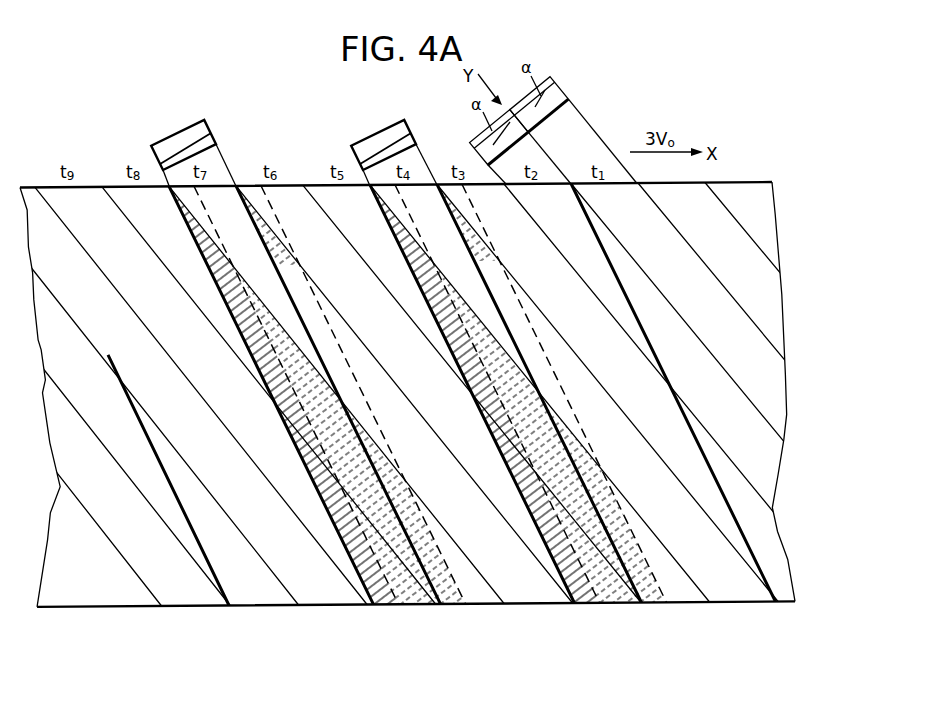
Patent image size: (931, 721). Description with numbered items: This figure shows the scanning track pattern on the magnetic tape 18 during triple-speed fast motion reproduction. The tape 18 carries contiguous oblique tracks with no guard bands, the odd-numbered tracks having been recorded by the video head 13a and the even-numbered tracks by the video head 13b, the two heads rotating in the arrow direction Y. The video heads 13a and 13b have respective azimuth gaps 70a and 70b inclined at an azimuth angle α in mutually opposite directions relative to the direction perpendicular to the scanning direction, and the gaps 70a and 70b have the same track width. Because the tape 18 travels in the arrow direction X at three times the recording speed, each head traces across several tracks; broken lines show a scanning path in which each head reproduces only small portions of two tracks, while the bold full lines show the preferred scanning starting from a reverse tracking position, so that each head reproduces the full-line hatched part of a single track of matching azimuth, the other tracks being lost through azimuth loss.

The video head 13a is at (362, 135).
The video head 13b is at (162, 140).
The azimuth gap 70a is at (569, 100).
The azimuth gap 70b is at (487, 163).
The magnetic tape 18 is at (744, 176).